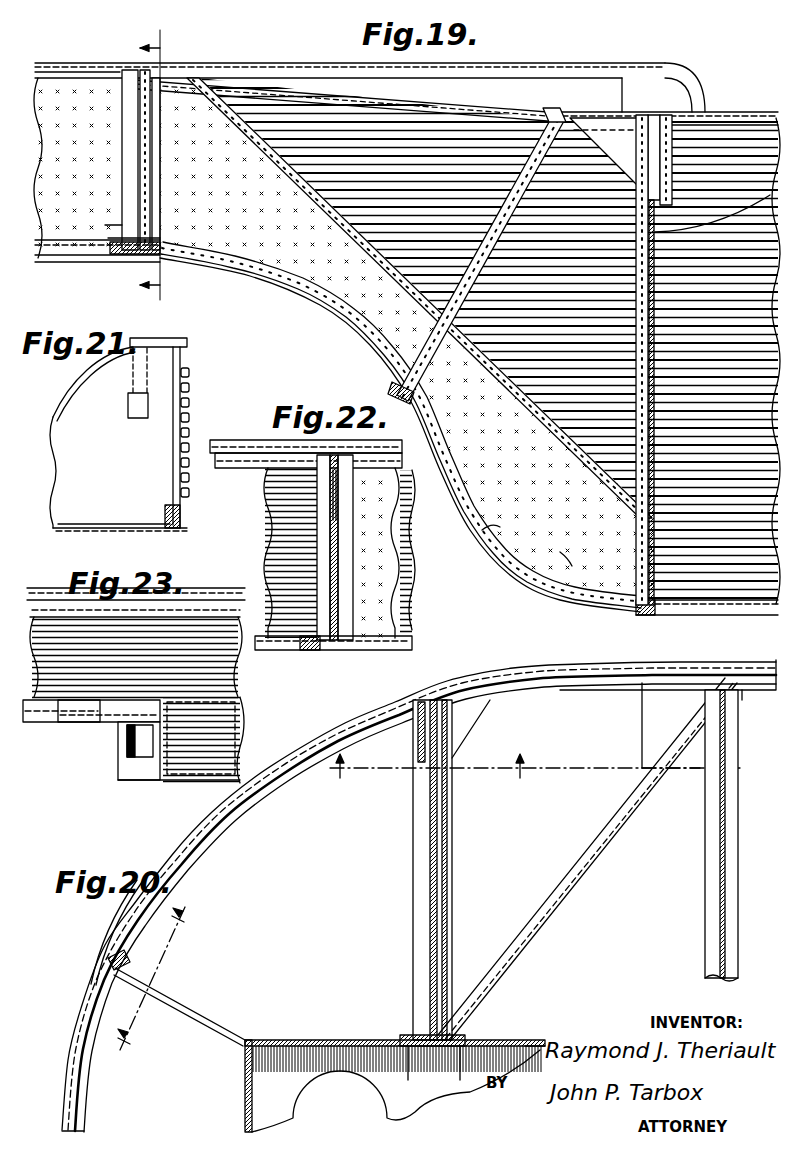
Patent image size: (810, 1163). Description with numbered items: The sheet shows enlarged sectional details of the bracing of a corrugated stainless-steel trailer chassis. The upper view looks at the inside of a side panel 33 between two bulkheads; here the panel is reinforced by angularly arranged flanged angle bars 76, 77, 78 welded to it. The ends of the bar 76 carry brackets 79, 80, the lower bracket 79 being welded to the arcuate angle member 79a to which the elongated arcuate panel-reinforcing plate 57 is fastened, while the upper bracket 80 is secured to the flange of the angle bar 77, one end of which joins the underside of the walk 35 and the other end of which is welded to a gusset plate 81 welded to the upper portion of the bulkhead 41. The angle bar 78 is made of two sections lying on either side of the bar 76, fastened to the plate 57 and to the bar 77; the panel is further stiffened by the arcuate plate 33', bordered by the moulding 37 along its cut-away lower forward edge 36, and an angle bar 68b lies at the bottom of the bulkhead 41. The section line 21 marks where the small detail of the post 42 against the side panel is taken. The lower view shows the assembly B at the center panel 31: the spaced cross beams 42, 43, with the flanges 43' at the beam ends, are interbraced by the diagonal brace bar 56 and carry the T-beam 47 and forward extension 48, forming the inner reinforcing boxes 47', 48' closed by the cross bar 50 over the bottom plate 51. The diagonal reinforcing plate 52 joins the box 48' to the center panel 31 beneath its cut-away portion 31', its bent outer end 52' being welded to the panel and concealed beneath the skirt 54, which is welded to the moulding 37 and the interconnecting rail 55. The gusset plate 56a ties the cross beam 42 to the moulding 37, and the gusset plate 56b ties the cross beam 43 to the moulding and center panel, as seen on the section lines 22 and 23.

In FIG. 19, the section line 21— 21 is at (156, 163).
In FIG. 20, the section line 22— 22 is at (506, 770).
In FIG. 20, the section line 23— 23 is at (162, 976).
In FIG. 22, the center panel 31 is at (343, 553).
In FIG. 23, the center panel 31 is at (149, 632).
In FIG. 20, the center panel 31 is at (406, 897).
In FIG. 23, the cut-away portion 31' is at (102, 738).
In FIG. 19, the side panel 33 is at (499, 341).
In FIG. 21, the side panel 33 is at (203, 437).
In FIG. 20, the side panel 33 is at (672, 665).
In FIG. 19, the elongated arcuate plate 33' is at (333, 337).
In FIG. 21, the elongated arcuate plate 33' is at (201, 436).
In FIG. 22, the elongated arcuate plate 33' is at (429, 547).
In FIG. 20, the elongated arcuate plate 33' is at (544, 702).
In FIG. 19, the walk 35 is at (482, 68).
In FIG. 21, the walk 35 is at (154, 342).
In FIG. 22, the walk 35 is at (227, 445).
In FIG. 19, the cut-away lower forward edge 36 is at (300, 310).
In FIG. 19, the moulding 37 is at (46, 262).
In FIG. 21, the moulding 37 is at (184, 516).
In FIG. 22, the moulding 37 is at (414, 638).
In FIG. 23, the moulding 37 is at (240, 760).
In FIG. 19, the bulkhead 41 is at (724, 203).
In FIG. 19, the cross beam 42 is at (128, 96).
In FIG. 21, the cross beam 42 is at (72, 474).
In FIG. 20, the cross beam 42 is at (706, 838).
In FIG. 22, the cross beam 43 is at (377, 547).
In FIG. 20, the cross beam 43 is at (416, 870).
In FIG. 22, the flanges 43' is at (359, 547).
In FIG. 20, the flanges 43' is at (483, 729).
In FIG. 20, the T-beam 47 is at (468, 1026).
In FIG. 20, the inner reinforcing box 47' is at (464, 1030).
In FIG. 20, the forwardly extended portion 48 is at (395, 1024).
In FIG. 20, the inner reinforcing box 48' is at (397, 1039).
In FIG. 20, the cross bar 50 is at (245, 1062).
In FIG. 20, the bottom plate 51 is at (298, 1088).
In FIG. 23, the reinforcing plate 52 is at (122, 741).
In FIG. 20, the reinforcing plate 52 is at (179, 1007).
In FIG. 23, the bent outer end 52' is at (111, 748).
In FIG. 20, the bent outer end 52' is at (138, 961).
In FIG. 23, the skirt 54 is at (122, 778).
In FIG. 20, the skirt 54 is at (122, 920).
In FIG. 23, the interconnecting rail 55 is at (43, 724).
In FIG. 19, the brace bar 56 is at (116, 248).
In FIG. 20, the brace bar 56 is at (574, 868).
In FIG. 19, the gusset plate 56a is at (126, 258).
In FIG. 21, the gusset plate 56a is at (152, 527).
In FIG. 20, the gusset plate 56a is at (650, 728).
In FIG. 22, the gusset plate 56b is at (292, 648).
In FIG. 20, the gusset plate 56b is at (398, 738).
In FIG. 19, the panel-reinforcing plate 57 is at (566, 557).
In FIG. 20, the panel-reinforcing plate 57 is at (746, 692).
In FIG. 19, the angle bar 68b is at (646, 614).
In FIG. 19, the angle bar 76 is at (406, 394).
In FIG. 19, the angle bar 77 is at (378, 80).
In FIG. 19, the angle bar 78 is at (340, 328).
In FIG. 19, the lower bracket 79 is at (396, 384).
In FIG. 19, the angle member 79a is at (500, 534).
In FIG. 19, the upper bracket 80 is at (552, 108).
In FIG. 19, the gusset plate 81 is at (598, 134).
In FIG. 20, the bracing assembly B is at (532, 1042).